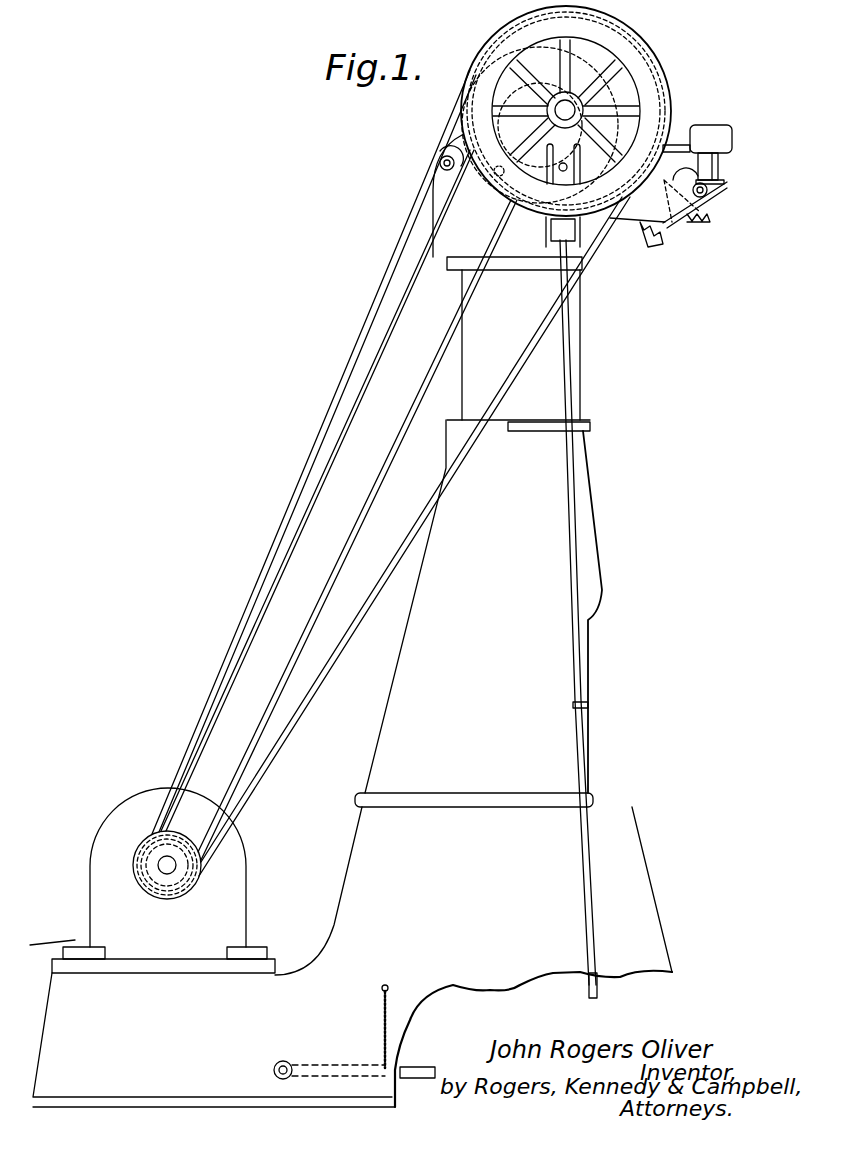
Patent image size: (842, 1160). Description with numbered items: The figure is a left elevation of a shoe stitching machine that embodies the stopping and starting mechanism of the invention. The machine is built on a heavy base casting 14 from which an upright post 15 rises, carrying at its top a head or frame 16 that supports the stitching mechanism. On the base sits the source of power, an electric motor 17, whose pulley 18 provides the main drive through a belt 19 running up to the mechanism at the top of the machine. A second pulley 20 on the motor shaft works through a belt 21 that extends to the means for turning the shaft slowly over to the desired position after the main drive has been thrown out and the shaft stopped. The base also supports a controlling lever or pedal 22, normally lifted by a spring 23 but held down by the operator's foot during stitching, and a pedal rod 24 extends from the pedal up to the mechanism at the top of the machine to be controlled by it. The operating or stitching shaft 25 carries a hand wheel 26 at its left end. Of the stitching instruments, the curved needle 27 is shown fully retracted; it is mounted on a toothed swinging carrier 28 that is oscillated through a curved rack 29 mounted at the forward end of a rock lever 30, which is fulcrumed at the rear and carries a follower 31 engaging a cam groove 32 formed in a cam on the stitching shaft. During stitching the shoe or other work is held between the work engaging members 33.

The base casting 14 is at (352, 957).
The upright post 15 is at (478, 613).
The head or frame 16 is at (507, 277).
The electric motor 17 is at (152, 880).
The pulley 18 is at (136, 862).
The belt 19 is at (243, 617).
The second pulley 20 is at (145, 880).
The belt 21 is at (298, 580).
The controlling lever or pedal 22 is at (418, 1066).
The spring 23 is at (378, 1013).
The pedal rod 24 is at (588, 728).
The stitching shaft 25 is at (562, 104).
The hand wheel 26 is at (657, 72).
The curved needle 27 is at (684, 140).
The toothed swinging carrier 28 is at (707, 224).
The curved rack 29 is at (658, 245).
The rock lever 30 is at (567, 195).
The follower 31 is at (578, 146).
The cam groove 32 is at (488, 56).
The work engaging members 33 is at (727, 190).